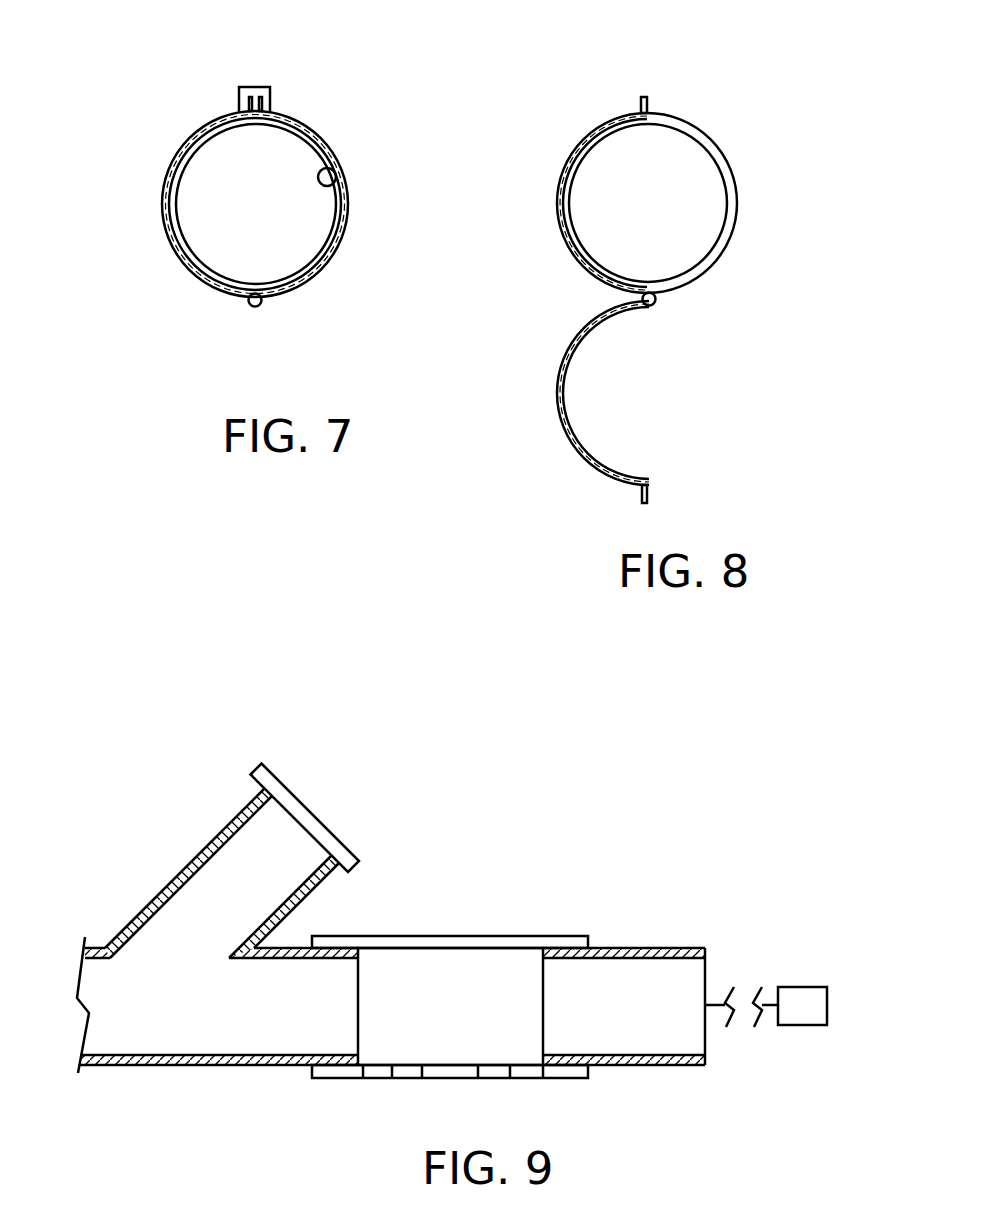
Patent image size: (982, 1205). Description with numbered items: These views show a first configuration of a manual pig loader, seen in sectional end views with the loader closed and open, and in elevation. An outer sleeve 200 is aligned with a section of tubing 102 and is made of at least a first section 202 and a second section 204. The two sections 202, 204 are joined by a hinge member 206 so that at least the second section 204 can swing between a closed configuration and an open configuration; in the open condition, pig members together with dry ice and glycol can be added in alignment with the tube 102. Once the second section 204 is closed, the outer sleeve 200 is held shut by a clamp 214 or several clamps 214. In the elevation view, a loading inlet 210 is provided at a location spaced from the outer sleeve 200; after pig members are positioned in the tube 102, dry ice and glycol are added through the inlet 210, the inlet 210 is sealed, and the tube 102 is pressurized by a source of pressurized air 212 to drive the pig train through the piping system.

In FIG. 7, the tubing 102 is at (338, 187).
In FIG. 8, the tubing 102 is at (700, 135).
In FIG. 9, the tubing 102 is at (633, 946).
In FIG. 7, the outer sleeve 200 is at (312, 116).
In FIG. 8, the outer sleeve 200 is at (572, 277).
In FIG. 9, the outer sleeve 200 is at (468, 928).
In FIG. 7, the first section 202 is at (163, 207).
In FIG. 8, the first section 202 is at (590, 134).
In FIG. 7, the second section 204 is at (337, 255).
In FIG. 8, the second section 204 is at (557, 393).
In FIG. 7, the hinge member 206 is at (253, 308).
In FIG. 8, the hinge member 206 is at (658, 302).
In FIG. 9, the hinge member 206 is at (432, 1079).
In FIG. 9, the loading inlet 210 is at (209, 844).
In FIG. 9, the source of pressurized air 212 is at (800, 987).
In FIG. 7, the clamp 214 is at (254, 86).